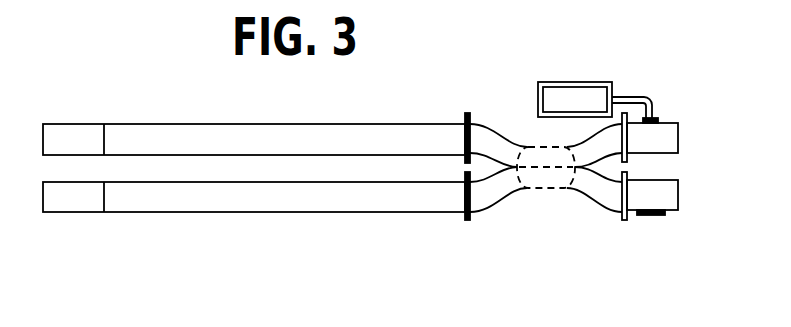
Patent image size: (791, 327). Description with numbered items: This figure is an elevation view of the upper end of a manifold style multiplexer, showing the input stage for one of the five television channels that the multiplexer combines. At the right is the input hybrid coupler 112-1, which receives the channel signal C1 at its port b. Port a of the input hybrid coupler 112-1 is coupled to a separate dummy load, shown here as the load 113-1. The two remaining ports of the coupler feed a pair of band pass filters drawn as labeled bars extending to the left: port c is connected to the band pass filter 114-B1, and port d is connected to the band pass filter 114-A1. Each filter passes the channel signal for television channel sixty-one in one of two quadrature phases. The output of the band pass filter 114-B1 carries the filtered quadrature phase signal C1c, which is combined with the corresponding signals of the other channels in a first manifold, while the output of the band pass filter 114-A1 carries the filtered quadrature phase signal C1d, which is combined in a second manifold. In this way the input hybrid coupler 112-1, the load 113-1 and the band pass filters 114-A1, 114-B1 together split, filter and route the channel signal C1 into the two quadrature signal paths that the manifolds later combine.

The band pass filter 114-A1 is at (147, 124).
The band pass filter 114-B1 is at (163, 212).
The input hybrid coupler 112-1 is at (555, 124).
The load 113-1 is at (578, 82).
The filtered quadrature phase signal C1c is at (468, 113).
The filtered quadrature phase signal C1d is at (489, 213).
The channel signal C1 is at (674, 184).
The port c is at (504, 131).
The port d is at (514, 198).
The port a is at (672, 130).
The port b is at (672, 190).